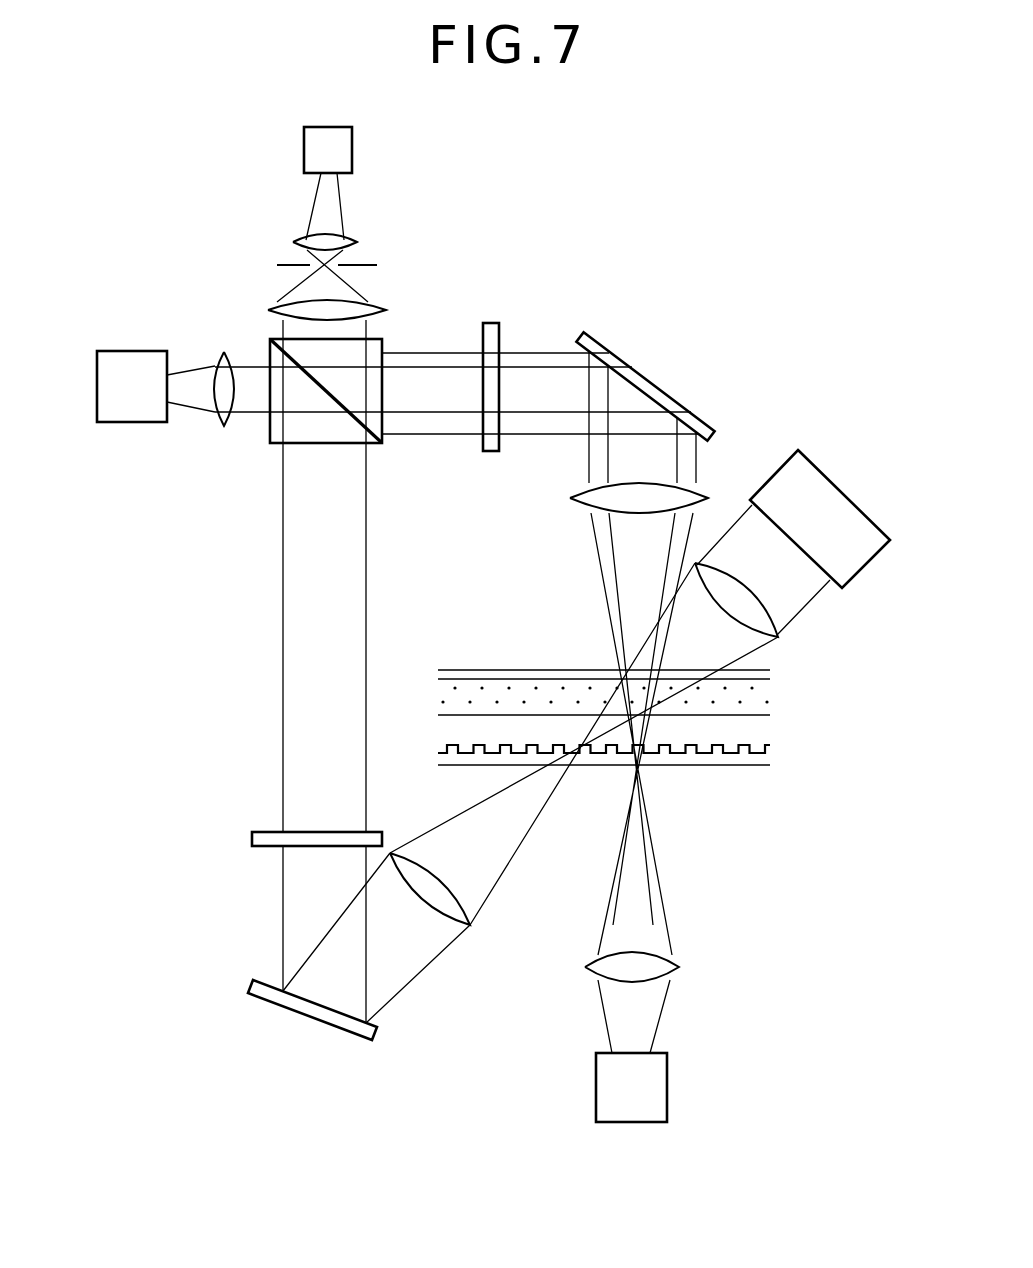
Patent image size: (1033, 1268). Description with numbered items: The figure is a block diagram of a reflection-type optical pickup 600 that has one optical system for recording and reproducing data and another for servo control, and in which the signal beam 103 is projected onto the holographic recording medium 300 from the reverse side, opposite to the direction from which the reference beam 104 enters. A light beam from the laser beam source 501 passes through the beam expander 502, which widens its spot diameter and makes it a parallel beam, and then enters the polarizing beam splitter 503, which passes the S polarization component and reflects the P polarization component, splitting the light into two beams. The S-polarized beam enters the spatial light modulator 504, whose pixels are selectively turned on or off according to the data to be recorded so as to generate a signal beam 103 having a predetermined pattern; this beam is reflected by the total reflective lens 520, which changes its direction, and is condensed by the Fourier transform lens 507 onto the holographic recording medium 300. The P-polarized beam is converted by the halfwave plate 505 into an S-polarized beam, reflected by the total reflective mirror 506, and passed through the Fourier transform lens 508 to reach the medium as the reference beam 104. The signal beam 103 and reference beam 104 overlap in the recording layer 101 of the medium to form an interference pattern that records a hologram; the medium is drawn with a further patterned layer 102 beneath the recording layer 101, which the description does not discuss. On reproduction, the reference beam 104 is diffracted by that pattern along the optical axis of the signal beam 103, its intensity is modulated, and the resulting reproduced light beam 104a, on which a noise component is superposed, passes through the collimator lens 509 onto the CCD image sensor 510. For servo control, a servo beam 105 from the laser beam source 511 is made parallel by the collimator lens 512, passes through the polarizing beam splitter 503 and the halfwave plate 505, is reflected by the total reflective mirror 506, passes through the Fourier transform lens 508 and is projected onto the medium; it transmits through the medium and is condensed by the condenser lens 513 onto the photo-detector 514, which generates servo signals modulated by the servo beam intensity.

The optical pickup 600 is at (648, 133).
The laser beam source 501 is at (352, 150).
The beam expander 502 is at (268, 228).
The polarizing beam splitter 503 is at (383, 337).
The spatial light modulator 504 is at (254, 845).
The halfwave plate 505 is at (494, 323).
The total reflective mirror 506 is at (606, 341).
The Fourier transform lens 507 is at (469, 927).
The Fourier transform lens 508 is at (570, 498).
The collimator lens 509 is at (780, 637).
The CCD image sensor 510 is at (772, 482).
The laser beam source 511 is at (151, 351).
The collimator lens 512 is at (228, 423).
The condenser lens 513 is at (682, 965).
The photo-detector 514 is at (668, 1065).
The total reflective lens 520 is at (252, 990).
The recording layer 101 is at (473, 692).
The patterned layer of sample 102 is at (473, 743).
The signal beam 103 is at (283, 915).
The reference beam 104 is at (442, 436).
The reproduced light beam 104a is at (758, 657).
The servo beam 105 is at (192, 408).
The holographic recording medium 300 is at (614, 694).